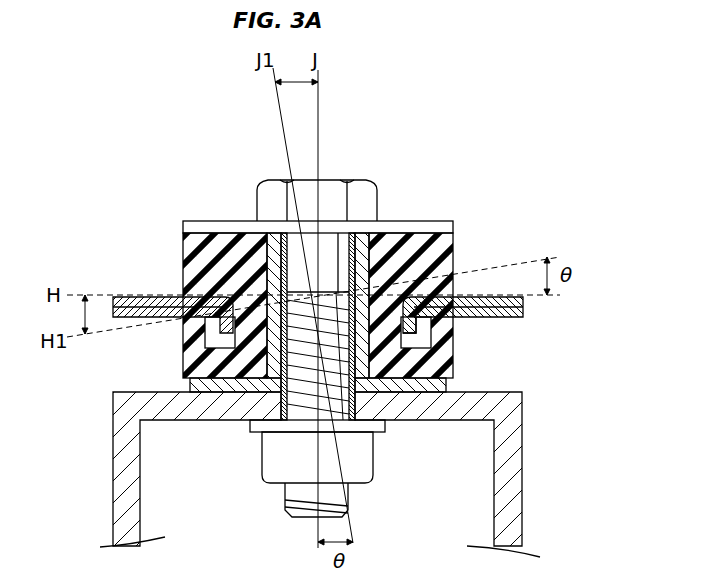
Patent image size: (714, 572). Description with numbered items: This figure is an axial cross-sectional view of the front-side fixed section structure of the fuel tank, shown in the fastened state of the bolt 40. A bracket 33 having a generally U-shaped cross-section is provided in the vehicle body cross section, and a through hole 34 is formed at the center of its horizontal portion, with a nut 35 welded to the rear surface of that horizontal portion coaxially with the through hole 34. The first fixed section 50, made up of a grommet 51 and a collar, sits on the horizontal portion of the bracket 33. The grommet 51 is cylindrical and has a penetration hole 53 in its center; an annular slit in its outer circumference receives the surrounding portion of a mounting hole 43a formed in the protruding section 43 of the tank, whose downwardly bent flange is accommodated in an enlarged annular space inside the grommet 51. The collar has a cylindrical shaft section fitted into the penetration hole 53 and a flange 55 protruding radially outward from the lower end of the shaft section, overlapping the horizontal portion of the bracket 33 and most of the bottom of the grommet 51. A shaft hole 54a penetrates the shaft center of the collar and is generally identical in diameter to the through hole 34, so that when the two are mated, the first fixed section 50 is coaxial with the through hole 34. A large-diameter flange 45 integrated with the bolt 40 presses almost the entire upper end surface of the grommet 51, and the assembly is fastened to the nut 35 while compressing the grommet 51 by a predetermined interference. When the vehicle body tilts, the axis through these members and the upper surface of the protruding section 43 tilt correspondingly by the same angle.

The bracket 33 is at (523, 433).
The through hole 34 is at (288, 335).
The nut 35 is at (373, 457).
The bolt 40 is at (368, 178).
The protruding section 43 is at (140, 296).
The mounting hole 43a is at (395, 293).
The large-diameter flange 45 is at (326, 161).
The first fixed section 50 is at (183, 248).
The grommet 51 is at (187, 221).
The penetration hole 53 is at (268, 232).
The shaft hole 54a is at (310, 258).
The flange 55 is at (430, 372).